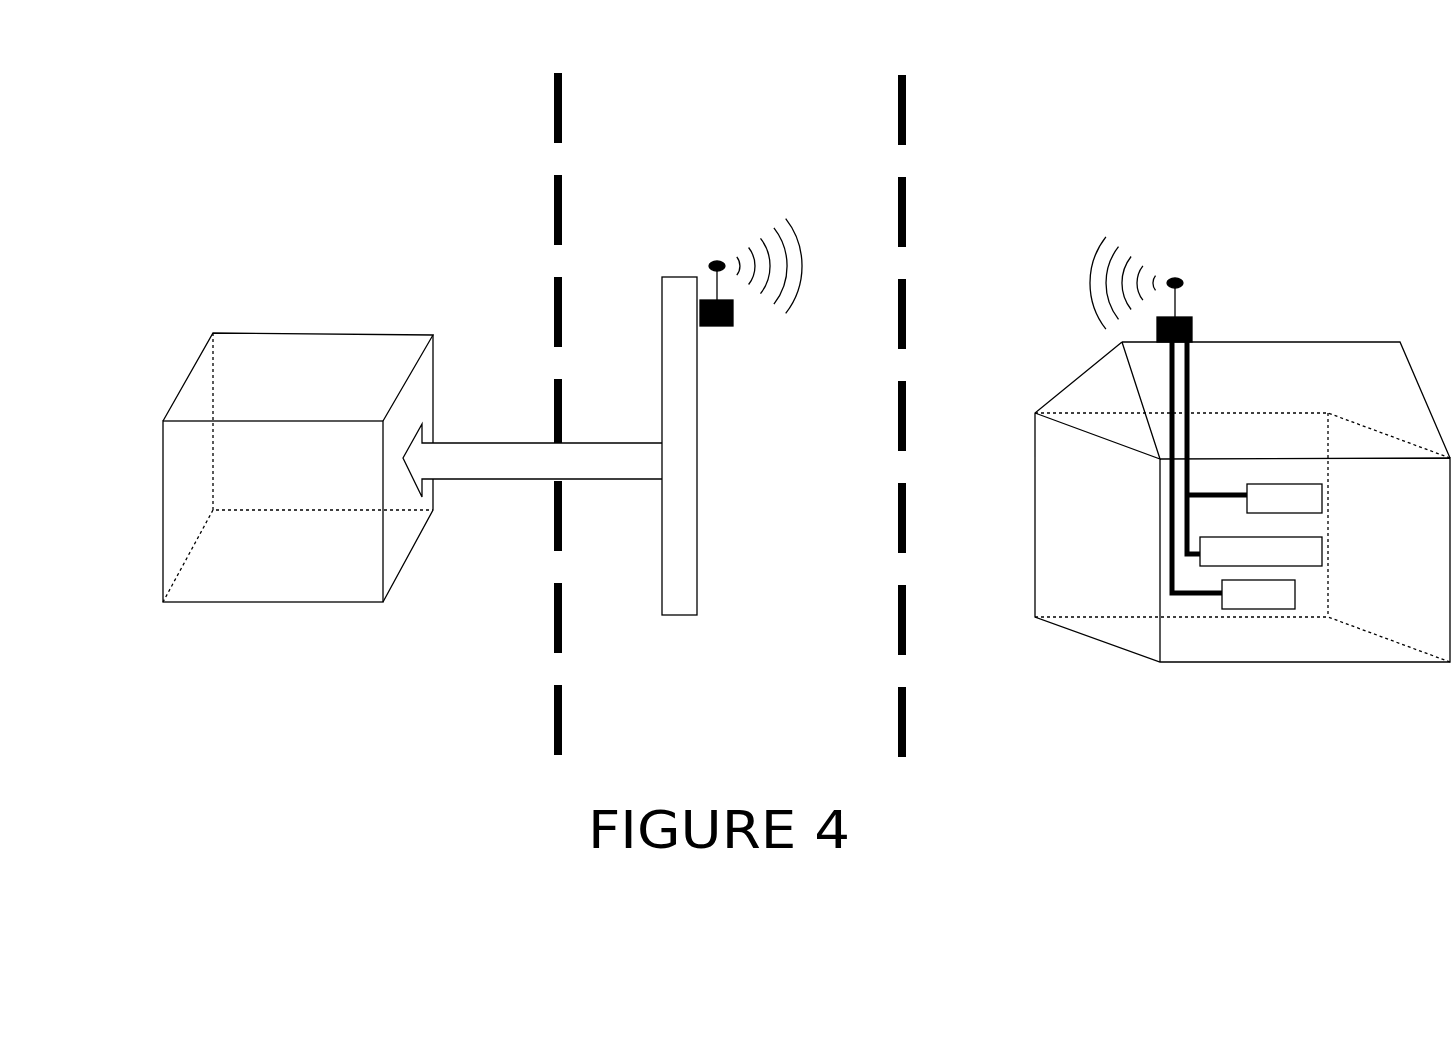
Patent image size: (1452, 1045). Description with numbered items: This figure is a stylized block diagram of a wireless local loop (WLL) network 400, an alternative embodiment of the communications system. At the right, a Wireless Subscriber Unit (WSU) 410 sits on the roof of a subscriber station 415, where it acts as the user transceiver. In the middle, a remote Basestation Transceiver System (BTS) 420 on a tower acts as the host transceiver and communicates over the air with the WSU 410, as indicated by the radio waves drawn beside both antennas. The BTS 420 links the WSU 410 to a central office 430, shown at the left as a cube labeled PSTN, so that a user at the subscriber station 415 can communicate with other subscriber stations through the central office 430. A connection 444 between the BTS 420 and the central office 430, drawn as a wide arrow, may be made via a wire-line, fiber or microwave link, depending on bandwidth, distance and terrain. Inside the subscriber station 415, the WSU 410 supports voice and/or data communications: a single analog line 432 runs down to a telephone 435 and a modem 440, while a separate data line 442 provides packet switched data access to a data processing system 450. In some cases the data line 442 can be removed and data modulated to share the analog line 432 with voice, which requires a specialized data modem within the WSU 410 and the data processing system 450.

The WLL network 400 is at (440, 760).
The Wireless Subscriber Unit 410 is at (1192, 326).
The subscriber station 415 is at (1072, 632).
The Basestation Transceiver System 420 is at (715, 327).
The central office 430 is at (408, 558).
The analog line 432 is at (1190, 392).
The telephone 435 is at (1322, 484).
The modem 440 is at (1322, 538).
The data line 442 is at (1172, 510).
The connection 444 is at (512, 480).
The data processing system 450 is at (1295, 583).